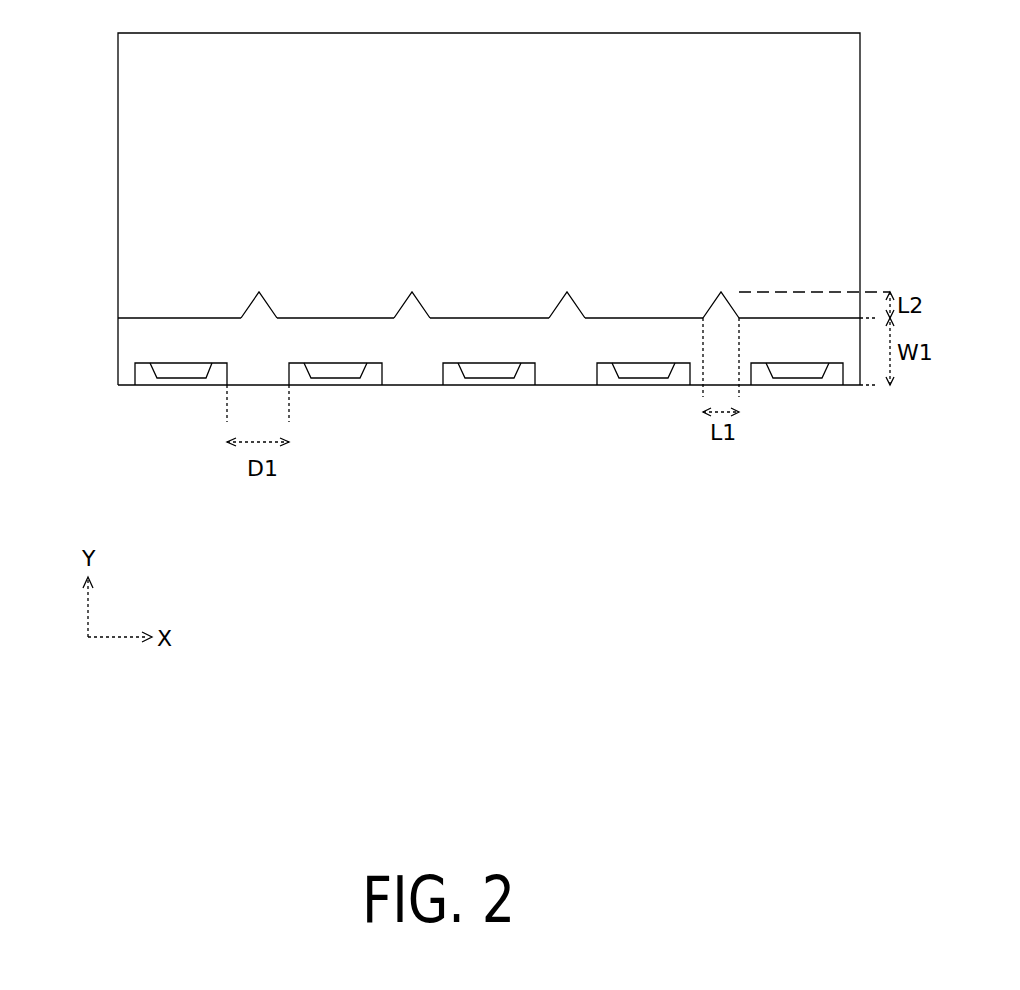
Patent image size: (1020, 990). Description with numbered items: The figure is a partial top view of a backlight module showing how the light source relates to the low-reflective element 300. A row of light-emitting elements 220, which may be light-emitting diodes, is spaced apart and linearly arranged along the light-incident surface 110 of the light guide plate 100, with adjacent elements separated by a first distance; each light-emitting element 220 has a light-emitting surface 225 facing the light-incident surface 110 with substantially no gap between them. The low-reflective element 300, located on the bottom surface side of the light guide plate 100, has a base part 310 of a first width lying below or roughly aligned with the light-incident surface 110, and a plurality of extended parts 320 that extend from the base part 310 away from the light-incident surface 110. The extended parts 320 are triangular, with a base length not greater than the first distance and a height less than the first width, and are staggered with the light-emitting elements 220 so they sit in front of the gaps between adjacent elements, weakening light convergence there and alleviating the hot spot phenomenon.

The light guide plate 100 is at (847, 131).
The light-incident surface 110 is at (125, 386).
The light-emitting element 220 is at (845, 378).
The light-emitting surface 225 is at (782, 362).
The low-reflective element 300 is at (440, 296).
The base part 310 is at (127, 335).
The extended part 320 is at (250, 307).